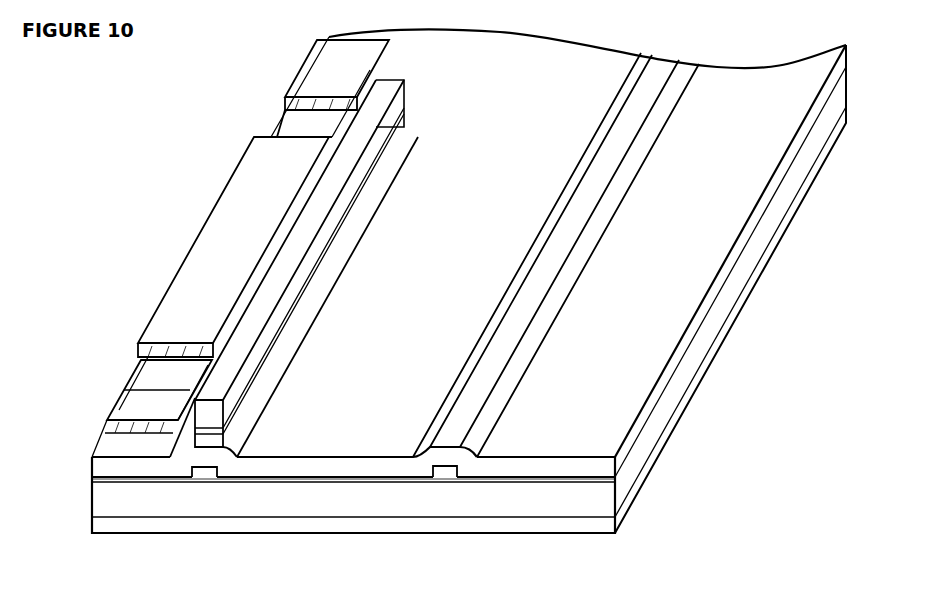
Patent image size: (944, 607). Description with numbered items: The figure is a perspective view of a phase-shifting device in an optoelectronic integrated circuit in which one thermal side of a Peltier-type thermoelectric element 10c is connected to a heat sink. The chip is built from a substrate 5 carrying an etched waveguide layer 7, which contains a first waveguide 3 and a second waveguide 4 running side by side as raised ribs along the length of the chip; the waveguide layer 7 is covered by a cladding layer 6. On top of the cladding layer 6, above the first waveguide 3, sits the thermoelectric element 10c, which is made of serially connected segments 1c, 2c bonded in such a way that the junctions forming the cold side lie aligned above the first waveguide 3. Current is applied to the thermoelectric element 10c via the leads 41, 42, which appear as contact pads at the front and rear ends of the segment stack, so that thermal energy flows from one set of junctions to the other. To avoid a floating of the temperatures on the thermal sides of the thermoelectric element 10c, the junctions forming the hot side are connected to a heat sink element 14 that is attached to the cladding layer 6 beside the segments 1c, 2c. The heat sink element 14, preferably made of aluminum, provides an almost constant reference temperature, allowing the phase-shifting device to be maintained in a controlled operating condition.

The substrate 5 is at (124, 528).
The first waveguide 3 is at (200, 476).
The waveguide layer 7 is at (245, 479).
The second waveguide 4 is at (445, 472).
The cladding layer 6 is at (515, 470).
The thermoelectric element 10c is at (397, 230).
The thermoelectric segment 1c is at (258, 393).
The thermoelectric segment 2c is at (270, 355).
The lead 41 is at (137, 407).
The lead 42 is at (325, 78).
The heat sink element 14 is at (243, 222).